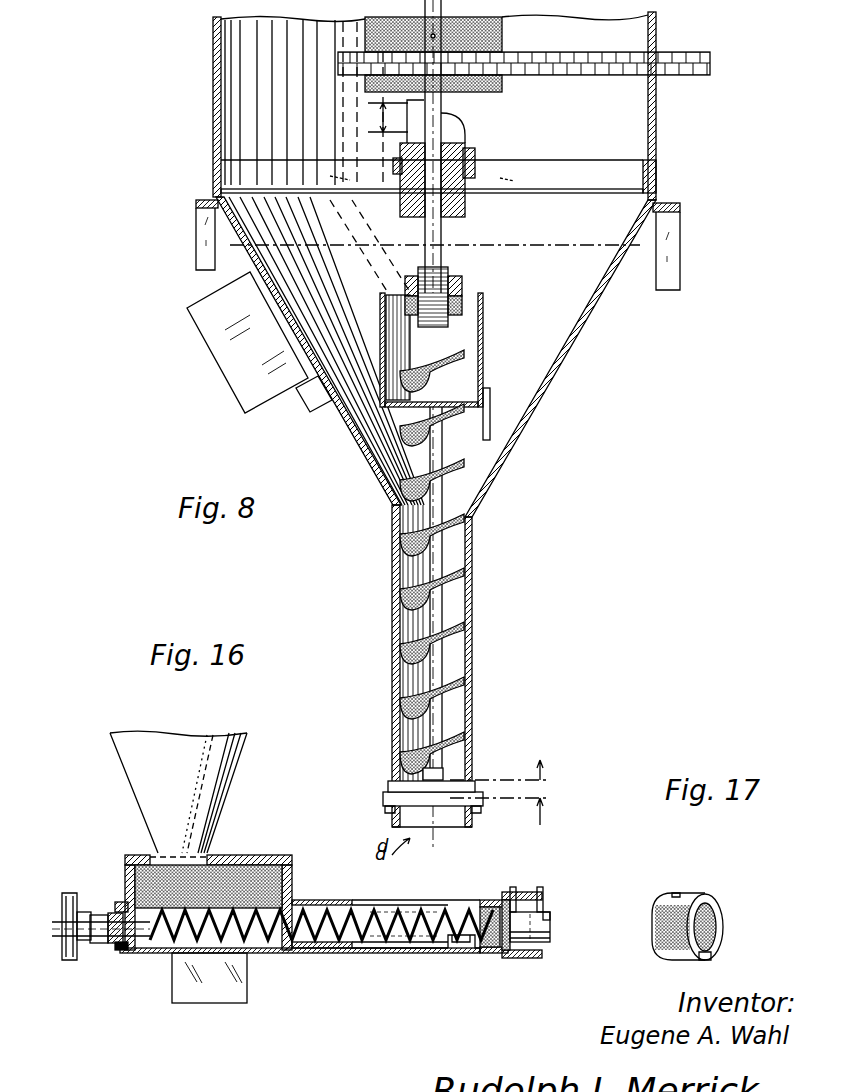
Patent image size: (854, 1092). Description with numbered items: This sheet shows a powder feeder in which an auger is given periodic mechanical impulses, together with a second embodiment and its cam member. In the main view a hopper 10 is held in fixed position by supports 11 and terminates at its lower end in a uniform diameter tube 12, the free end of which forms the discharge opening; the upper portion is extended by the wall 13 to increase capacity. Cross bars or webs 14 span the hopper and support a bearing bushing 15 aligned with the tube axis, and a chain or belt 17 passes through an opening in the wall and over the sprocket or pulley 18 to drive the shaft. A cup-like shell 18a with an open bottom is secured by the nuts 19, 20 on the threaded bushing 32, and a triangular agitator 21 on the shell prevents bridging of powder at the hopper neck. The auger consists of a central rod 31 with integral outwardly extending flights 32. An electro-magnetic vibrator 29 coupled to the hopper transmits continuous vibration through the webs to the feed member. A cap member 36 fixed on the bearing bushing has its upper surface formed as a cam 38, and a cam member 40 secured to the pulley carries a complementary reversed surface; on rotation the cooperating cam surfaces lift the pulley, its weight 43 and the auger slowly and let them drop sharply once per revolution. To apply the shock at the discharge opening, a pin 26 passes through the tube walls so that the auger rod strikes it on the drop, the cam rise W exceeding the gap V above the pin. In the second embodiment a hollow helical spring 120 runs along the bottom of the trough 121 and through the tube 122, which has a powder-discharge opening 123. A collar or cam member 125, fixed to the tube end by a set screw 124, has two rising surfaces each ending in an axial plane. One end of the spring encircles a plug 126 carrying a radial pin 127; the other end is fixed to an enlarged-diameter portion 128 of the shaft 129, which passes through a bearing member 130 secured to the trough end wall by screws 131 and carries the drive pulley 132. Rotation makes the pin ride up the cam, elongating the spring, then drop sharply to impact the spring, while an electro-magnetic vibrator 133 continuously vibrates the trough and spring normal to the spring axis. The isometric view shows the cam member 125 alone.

In FIG. 8, the hopper 10 is at (527, 442).
In FIG. 16, the hopper 10 is at (256, 760).
In FIG. 8, the supports 11 is at (200, 255).
In FIG. 8, the tube 12 is at (472, 640).
In FIG. 8, the hopper wall 13 is at (214, 140).
In FIG. 8, the cross bars or webs 14 is at (562, 192).
In FIG. 8, the bearing bushing 15 is at (467, 208).
In FIG. 8, the chain or belt 17 is at (660, 78).
In FIG. 8, the sprocket or pulley 18 is at (337, 88).
In FIG. 8, the cup-like shell 18a is at (485, 355).
In FIG. 8, the nut 19 is at (462, 290).
In FIG. 8, the nut 20 is at (465, 307).
In FIG. 8, the triangular agitator 21 is at (499, 421).
In FIG. 8, the pin 26 is at (483, 800).
In FIG. 8, the electro-magnetic vibrator 29 is at (225, 360).
In FIG. 8, the auger rod 31 is at (455, 762).
In FIG. 8, the flights / internally-threaded bushing 32 is at (450, 285).
In FIG. 8, the cap member 36 is at (478, 152).
In FIG. 8, the cam surface / cam member 38 is at (470, 116).
In FIG. 8, the cam member 40 is at (410, 100).
In FIG. 8, the weight 43 is at (500, 35).
In FIG. 16, the hollow helical spring 120 is at (290, 952).
In FIG. 16, the trough 121 is at (290, 890).
In FIG. 16, the tube 122 is at (440, 900).
In FIG. 16, the powder-discharge opening 123 is at (461, 957).
In FIG. 16, the set screw 124 is at (514, 892).
In FIG. 16, the collar or cam member 125 is at (542, 890).
In FIG. 17, the collar or cam member 125 is at (693, 905).
In FIG. 16, the plug 126 is at (548, 958).
In FIG. 16, the radial pin 127 is at (550, 906).
In FIG. 16, the enlarged-diameter portion 128 is at (145, 955).
In FIG. 16, the shaft 129 is at (60, 960).
In FIG. 16, the bearing member 130 is at (98, 903).
In FIG. 16, the screws 131 is at (104, 905).
In FIG. 16, the drive pulley 132 is at (120, 935).
In FIG. 16, the electro-magnetic vibrator 133 is at (248, 1000).